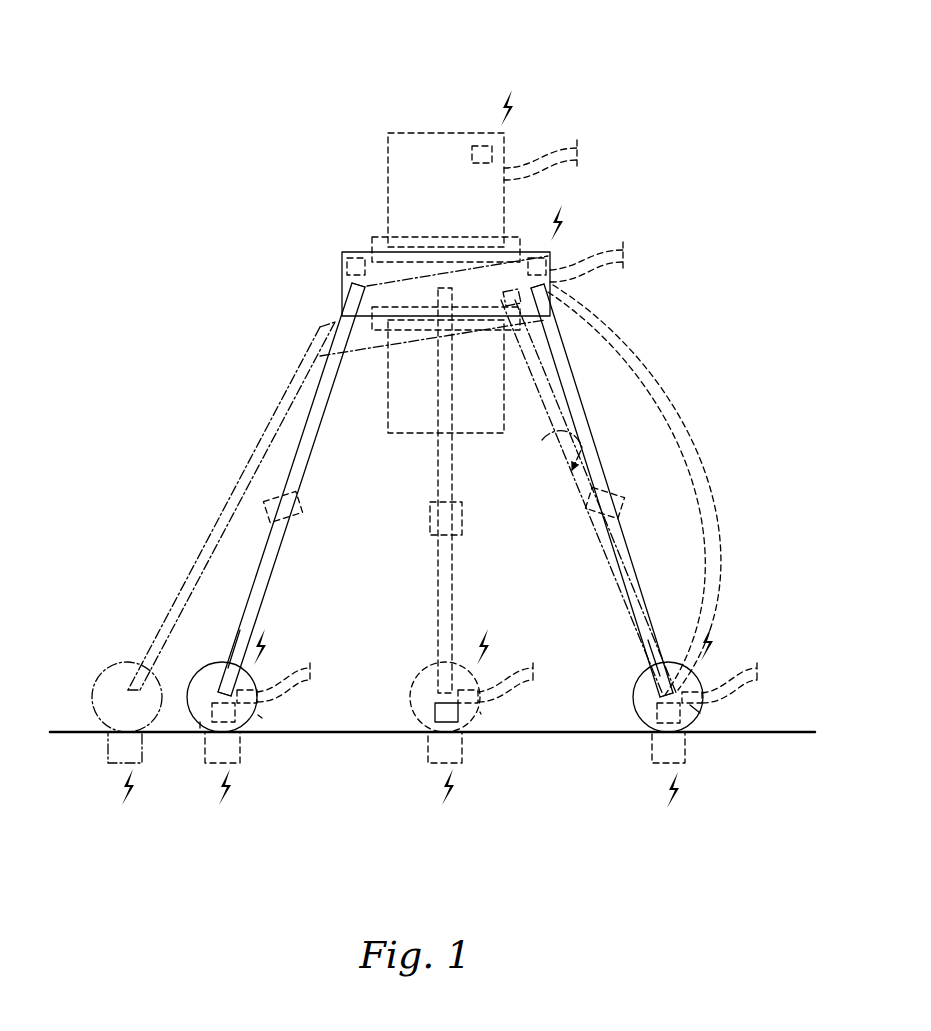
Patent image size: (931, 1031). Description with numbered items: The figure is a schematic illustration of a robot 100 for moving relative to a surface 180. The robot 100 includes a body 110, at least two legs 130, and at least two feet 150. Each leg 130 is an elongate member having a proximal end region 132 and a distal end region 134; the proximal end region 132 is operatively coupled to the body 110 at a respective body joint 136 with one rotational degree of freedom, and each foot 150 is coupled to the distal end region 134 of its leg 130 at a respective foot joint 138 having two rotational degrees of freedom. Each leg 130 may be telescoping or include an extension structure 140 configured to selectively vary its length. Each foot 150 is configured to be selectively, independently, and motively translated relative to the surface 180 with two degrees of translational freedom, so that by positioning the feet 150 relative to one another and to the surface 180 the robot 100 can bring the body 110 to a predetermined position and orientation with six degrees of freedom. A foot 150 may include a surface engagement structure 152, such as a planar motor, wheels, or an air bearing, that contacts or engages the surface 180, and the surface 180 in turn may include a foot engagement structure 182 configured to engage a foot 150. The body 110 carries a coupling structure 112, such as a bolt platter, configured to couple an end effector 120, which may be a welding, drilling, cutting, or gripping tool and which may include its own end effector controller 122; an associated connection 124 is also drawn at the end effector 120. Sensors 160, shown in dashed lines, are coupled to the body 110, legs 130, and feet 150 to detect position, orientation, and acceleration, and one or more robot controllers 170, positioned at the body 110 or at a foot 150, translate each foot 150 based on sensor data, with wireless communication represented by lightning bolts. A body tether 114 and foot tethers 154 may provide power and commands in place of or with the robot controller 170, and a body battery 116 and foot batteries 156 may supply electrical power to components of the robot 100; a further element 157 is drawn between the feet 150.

The robot 100 is at (195, 66).
The body 110 is at (354, 249).
The coupling structure 112 is at (372, 237).
The body tether 114 is at (614, 248).
The body battery 116 is at (553, 265).
The end effector 120 is at (388, 161).
The end effector controller 122 is at (482, 146).
The connection 124 is at (567, 145).
The leg 130 is at (228, 497).
The proximal end region 132 is at (343, 308).
The distal end region 134 is at (233, 647).
The body joint 136 is at (347, 285).
The foot joint 138 is at (222, 683).
The extension structure 140 is at (303, 517).
The foot 150 is at (90, 678).
The surface engagement structure 152 is at (702, 713).
The foot tether 154 is at (308, 665).
The foot battery 156 is at (235, 735).
The connector 157 is at (420, 720).
The sensor 160 is at (342, 257).
The robot controller 170 is at (212, 712).
The surface 180 is at (76, 729).
The foot engagement structure 182 is at (213, 765).